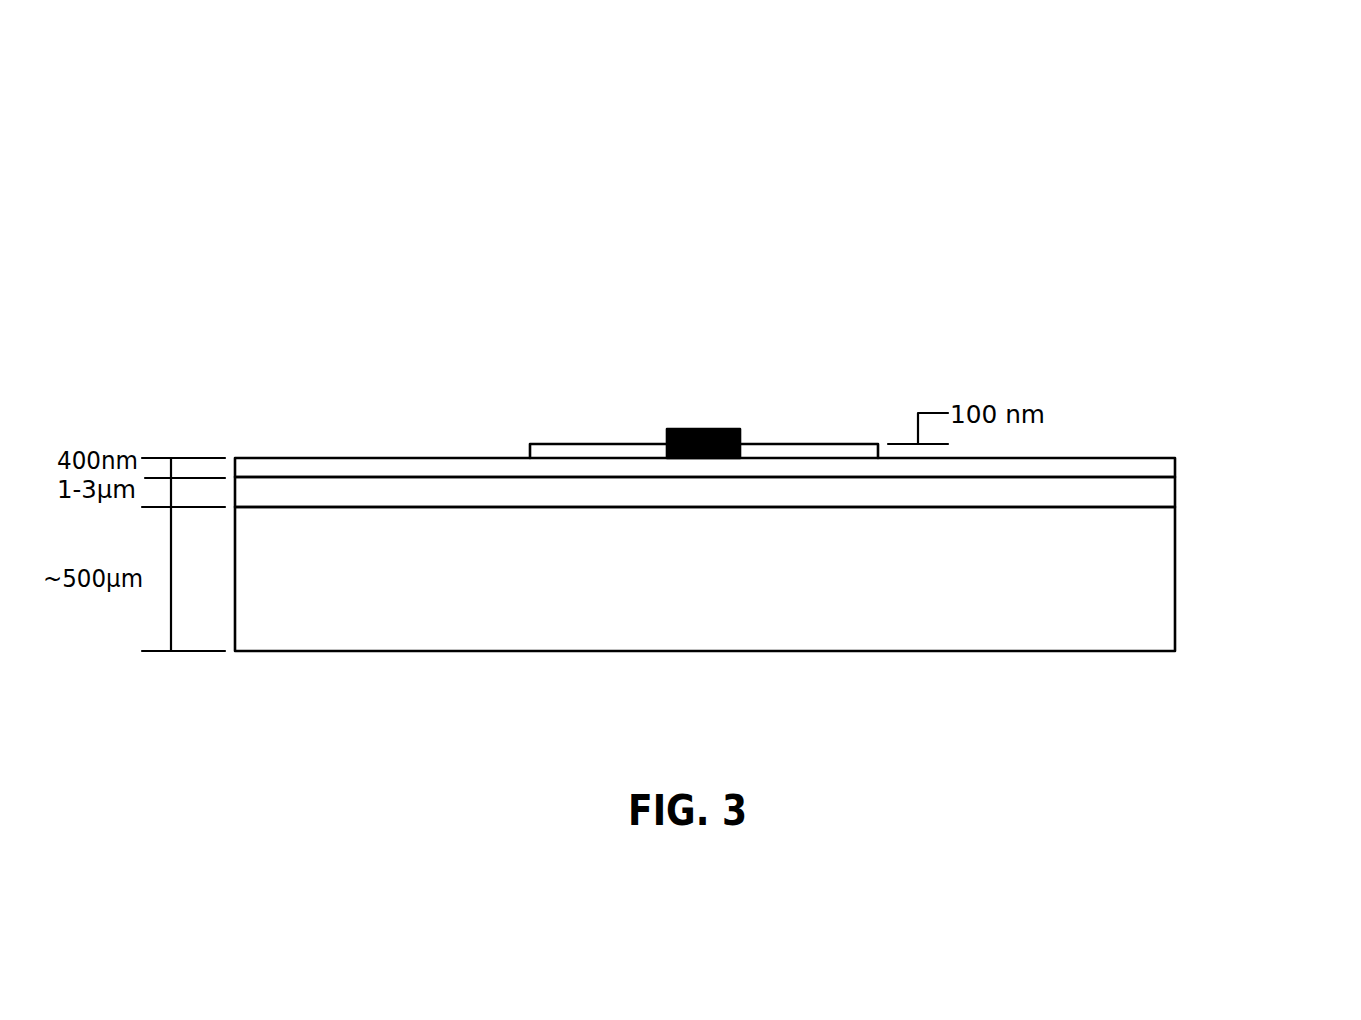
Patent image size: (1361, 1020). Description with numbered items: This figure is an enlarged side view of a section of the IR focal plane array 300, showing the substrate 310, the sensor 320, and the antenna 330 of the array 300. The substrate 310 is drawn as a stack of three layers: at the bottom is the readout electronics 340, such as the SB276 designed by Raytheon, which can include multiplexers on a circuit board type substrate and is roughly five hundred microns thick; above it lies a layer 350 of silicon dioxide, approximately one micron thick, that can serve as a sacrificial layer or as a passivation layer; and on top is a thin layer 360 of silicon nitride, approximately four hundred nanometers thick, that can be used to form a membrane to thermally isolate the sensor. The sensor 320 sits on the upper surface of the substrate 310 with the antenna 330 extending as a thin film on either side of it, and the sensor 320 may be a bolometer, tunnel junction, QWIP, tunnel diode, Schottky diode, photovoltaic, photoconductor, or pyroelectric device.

The IR focal plane array 300 is at (262, 113).
The substrate 310 is at (794, 558).
The sensor 320 is at (661, 407).
The antenna 330 is at (813, 414).
The readout electronics 340 is at (779, 580).
The silicon dioxide layer 350 is at (794, 508).
The silicon nitride layer 360 is at (775, 452).